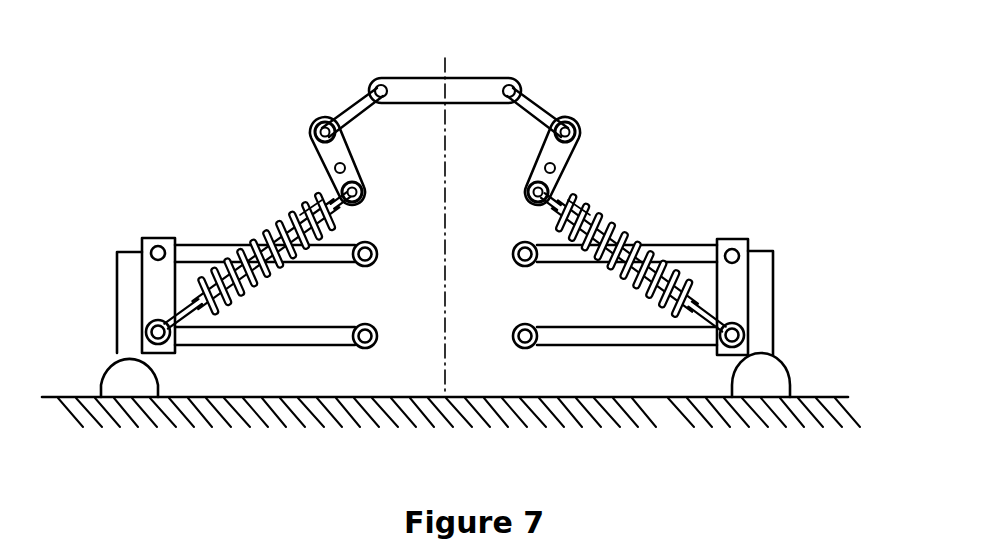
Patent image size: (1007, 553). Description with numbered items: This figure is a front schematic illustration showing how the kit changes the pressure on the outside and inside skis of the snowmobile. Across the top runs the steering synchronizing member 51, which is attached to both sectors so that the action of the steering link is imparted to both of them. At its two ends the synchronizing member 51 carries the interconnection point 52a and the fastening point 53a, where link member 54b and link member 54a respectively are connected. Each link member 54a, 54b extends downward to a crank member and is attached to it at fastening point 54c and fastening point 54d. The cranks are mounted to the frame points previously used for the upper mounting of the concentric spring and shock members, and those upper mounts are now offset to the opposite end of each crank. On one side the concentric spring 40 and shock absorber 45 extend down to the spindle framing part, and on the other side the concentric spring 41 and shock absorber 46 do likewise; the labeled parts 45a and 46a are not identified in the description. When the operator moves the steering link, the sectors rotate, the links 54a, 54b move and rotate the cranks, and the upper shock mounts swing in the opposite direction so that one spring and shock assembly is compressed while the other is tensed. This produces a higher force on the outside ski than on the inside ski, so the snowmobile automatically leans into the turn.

The steering synchronizing member 51 is at (445, 91).
The link member 54a is at (535, 105).
The link member 54b is at (352, 102).
The interconnection point 52a is at (316, 131).
The fastening point 53a is at (580, 128).
The fastening point 54c is at (567, 178).
The fastening point 54d is at (366, 189).
The shock absorber 45 is at (218, 260).
The left spring rod 45a is at (313, 203).
The spring 40 is at (270, 268).
The shock absorber 46 is at (637, 243).
The right spring rod 46a is at (598, 228).
The spring 41 is at (650, 243).